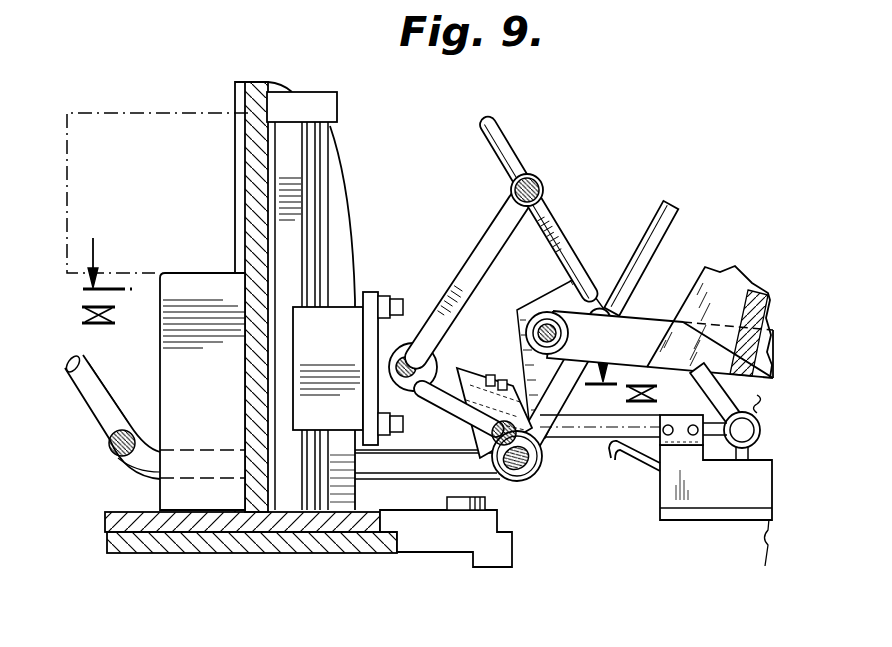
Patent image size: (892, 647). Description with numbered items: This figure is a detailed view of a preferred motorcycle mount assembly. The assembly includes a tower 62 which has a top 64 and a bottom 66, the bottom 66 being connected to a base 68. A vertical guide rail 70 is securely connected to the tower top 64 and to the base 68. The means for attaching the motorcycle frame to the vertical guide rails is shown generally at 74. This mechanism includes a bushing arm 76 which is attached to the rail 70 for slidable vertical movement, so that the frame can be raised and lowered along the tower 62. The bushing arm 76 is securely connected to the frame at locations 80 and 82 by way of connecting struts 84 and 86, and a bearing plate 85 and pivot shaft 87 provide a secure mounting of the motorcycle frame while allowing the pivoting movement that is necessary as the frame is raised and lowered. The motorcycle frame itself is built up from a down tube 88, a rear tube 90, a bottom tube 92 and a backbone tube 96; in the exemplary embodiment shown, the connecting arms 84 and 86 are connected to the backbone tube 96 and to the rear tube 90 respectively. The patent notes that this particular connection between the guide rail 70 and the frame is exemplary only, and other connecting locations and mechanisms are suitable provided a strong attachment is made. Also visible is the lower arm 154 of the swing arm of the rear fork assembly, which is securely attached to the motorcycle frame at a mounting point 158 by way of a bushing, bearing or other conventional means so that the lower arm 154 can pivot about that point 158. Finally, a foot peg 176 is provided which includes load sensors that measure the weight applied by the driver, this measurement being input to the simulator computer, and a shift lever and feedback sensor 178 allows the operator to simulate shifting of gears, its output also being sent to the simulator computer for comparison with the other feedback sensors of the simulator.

The tower 62 is at (253, 88).
The tower top 64 is at (310, 110).
The tower bottom 66 is at (262, 514).
The base 68 is at (437, 520).
The vertical guide rail 70 is at (315, 165).
The means for attaching the motorcycle frame to the vertical guide rails 74 is at (566, 186).
The bushing arm 76 is at (310, 370).
The frame connection location 80 is at (533, 176).
The frame connection location 82 is at (532, 494).
The connecting strut 84 is at (458, 278).
The bearing plate 85 is at (388, 292).
The connecting strut 86 is at (458, 400).
The pivot shaft 87 is at (420, 392).
The down tube 88 is at (93, 408).
The rear tube 90 is at (673, 215).
The bottom tube 92 is at (383, 467).
The backbone tube 96 is at (498, 138).
The lower arm 154 is at (648, 332).
The mounting point 158 is at (546, 326).
The foot peg 176 is at (736, 432).
The shift lever and feedback sensor 178 is at (640, 461).